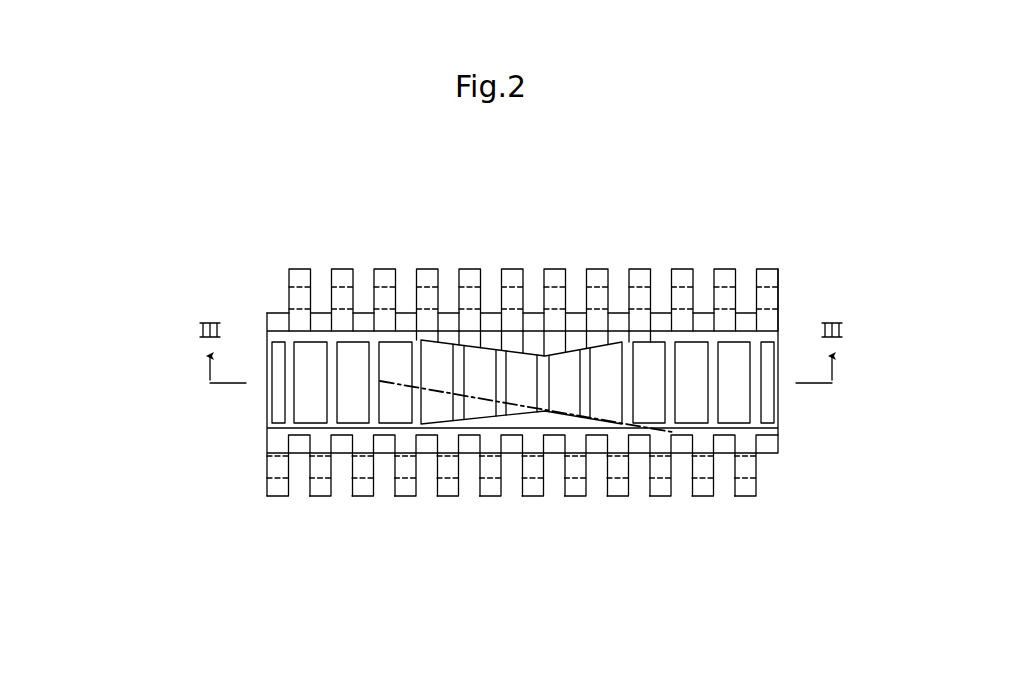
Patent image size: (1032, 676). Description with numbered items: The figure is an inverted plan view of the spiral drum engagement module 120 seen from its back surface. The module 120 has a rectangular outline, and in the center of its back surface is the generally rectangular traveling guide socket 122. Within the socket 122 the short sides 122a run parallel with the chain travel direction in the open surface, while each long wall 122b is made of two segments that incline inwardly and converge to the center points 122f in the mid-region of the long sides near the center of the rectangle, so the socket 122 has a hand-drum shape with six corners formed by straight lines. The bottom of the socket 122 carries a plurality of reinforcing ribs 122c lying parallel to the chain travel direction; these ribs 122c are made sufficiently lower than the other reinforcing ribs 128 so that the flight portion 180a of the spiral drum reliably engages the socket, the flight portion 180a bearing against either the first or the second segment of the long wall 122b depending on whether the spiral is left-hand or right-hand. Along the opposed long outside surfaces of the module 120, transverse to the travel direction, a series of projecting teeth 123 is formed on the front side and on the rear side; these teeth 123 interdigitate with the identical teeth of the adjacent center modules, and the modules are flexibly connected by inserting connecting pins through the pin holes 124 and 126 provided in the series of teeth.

The spiral drum engagement module 120 is at (545, 560).
The traveling guide socket 122 is at (610, 385).
The short sides 122a is at (620, 358).
The long wall 122b is at (486, 352).
The reinforcing ribs 122c is at (527, 358).
The center points 122f is at (506, 360).
The series of teeth 123 is at (742, 498).
The pin hole 124 is at (750, 470).
The pin hole 126 is at (300, 290).
The reinforcing ribs 128 is at (712, 362).
The flight portion 180a is at (638, 440).